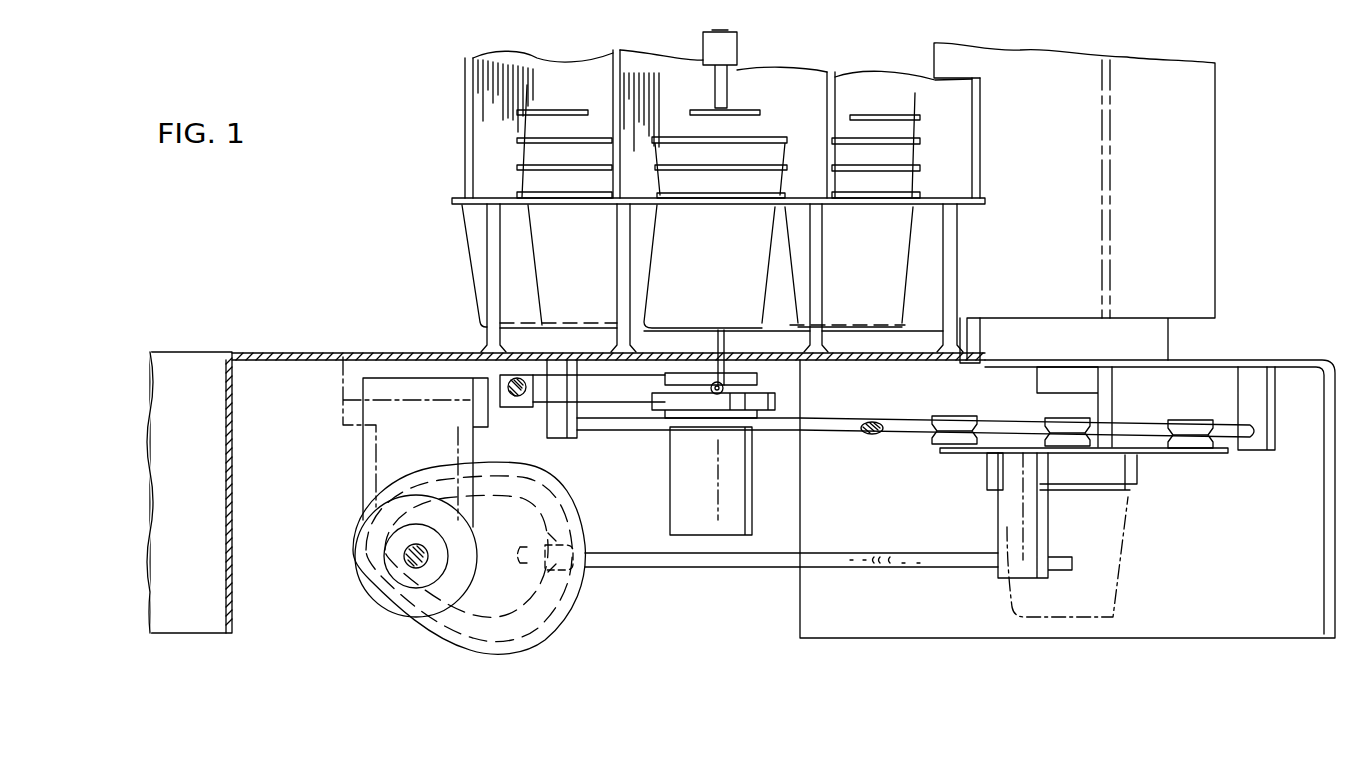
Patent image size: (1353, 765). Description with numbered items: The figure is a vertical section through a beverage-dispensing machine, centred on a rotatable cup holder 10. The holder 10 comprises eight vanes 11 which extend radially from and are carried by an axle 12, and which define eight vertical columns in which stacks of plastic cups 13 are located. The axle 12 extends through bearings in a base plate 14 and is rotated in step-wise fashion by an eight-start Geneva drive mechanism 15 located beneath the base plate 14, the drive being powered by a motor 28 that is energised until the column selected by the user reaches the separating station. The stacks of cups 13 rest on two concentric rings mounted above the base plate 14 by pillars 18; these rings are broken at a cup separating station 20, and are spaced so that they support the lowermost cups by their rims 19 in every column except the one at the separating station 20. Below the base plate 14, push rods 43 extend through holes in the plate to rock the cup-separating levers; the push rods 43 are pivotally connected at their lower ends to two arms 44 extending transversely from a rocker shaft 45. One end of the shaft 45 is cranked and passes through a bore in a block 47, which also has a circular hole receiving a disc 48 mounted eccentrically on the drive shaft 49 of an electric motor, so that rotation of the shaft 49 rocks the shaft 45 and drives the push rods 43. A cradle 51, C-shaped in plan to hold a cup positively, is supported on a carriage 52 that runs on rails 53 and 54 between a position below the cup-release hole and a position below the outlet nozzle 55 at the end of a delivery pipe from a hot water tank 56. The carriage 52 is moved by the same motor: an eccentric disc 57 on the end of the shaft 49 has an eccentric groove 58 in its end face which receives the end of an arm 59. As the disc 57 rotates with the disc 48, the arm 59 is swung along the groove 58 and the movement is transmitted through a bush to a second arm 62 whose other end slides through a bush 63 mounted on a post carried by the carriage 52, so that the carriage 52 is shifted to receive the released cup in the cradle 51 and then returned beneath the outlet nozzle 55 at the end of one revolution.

The rotatable cup holder 10 is at (452, 126).
The vanes 11 is at (498, 62).
The axle 12 is at (706, 38).
The plastic cups 13 is at (721, 284).
The base plate 14 is at (262, 352).
The Geneva drive mechanism 15 is at (793, 401).
The pillars 18 is at (953, 263).
The rims 19 is at (752, 201).
The cup separating station 20 is at (685, 247).
The motor 28 is at (736, 514).
The push rods 43 is at (725, 352).
The arms 44 is at (622, 395).
The rocker shaft 45 is at (485, 378).
The block 47 is at (383, 411).
The disc 48 is at (398, 578).
The drive shaft 49 is at (404, 556).
The cradle 51 is at (1133, 490).
The carriage 52 is at (1192, 455).
The rail 53 is at (908, 429).
The rail 54 is at (846, 432).
The outlet nozzle 55 is at (1043, 380).
The hot water tank 56 is at (1198, 227).
The eccentric disc 57 is at (548, 473).
The groove 58 is at (572, 609).
The arm 59 is at (568, 538).
The second arm 62 is at (662, 568).
The bush 63 is at (1017, 510).